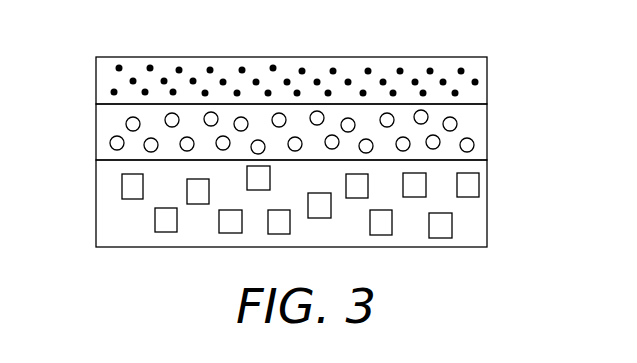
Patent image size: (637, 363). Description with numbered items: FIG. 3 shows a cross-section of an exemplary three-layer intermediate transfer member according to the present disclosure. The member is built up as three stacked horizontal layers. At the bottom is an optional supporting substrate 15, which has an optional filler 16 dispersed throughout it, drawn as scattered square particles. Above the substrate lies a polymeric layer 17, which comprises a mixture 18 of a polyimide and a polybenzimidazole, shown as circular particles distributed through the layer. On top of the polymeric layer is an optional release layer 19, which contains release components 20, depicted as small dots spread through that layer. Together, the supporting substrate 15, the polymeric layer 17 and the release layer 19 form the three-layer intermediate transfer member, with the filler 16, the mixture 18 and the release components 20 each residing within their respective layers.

The supporting substrate 15 is at (487, 198).
The filler 16 is at (122, 183).
The polymeric layer 17 is at (487, 133).
The mixture 18 is at (111, 139).
The release layer 19 is at (487, 78).
The release components 20 is at (111, 90).